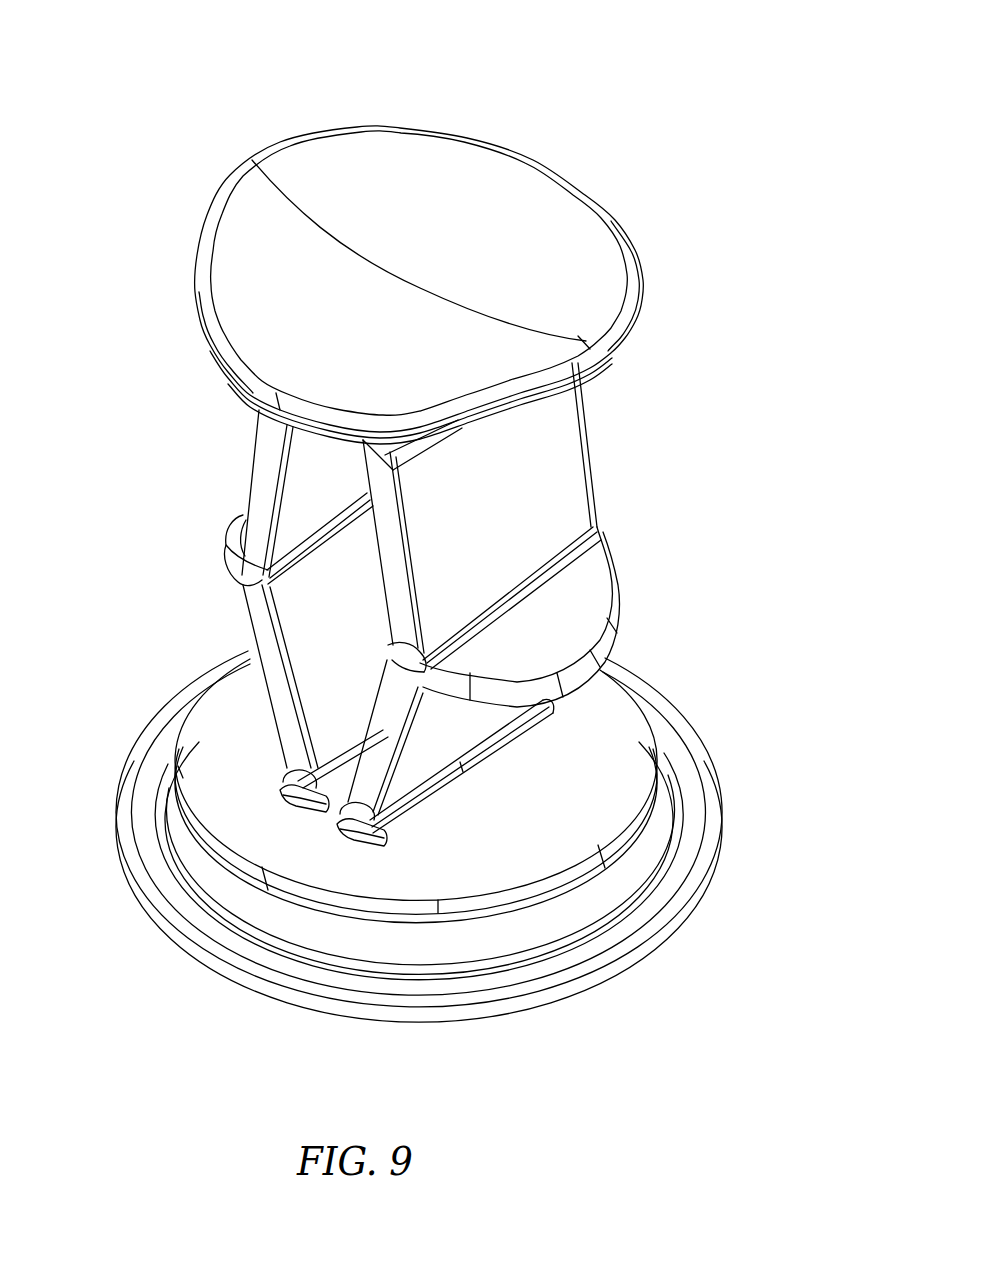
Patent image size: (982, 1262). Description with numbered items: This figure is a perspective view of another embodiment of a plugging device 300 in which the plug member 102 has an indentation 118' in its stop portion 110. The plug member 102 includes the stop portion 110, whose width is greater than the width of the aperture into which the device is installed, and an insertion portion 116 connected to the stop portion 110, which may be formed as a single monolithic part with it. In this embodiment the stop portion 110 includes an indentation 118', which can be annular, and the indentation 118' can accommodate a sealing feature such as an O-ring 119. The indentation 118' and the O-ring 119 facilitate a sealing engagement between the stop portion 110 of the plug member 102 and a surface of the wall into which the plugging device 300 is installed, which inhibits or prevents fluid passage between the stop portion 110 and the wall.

The stool assembly 300 is at (447, 528).
The plug member 102 is at (447, 844).
The insertion portion 116 is at (227, 730).
The indentation 118' is at (476, 833).
The O-ring 119 is at (684, 860).
The stop portion 110 is at (677, 900).